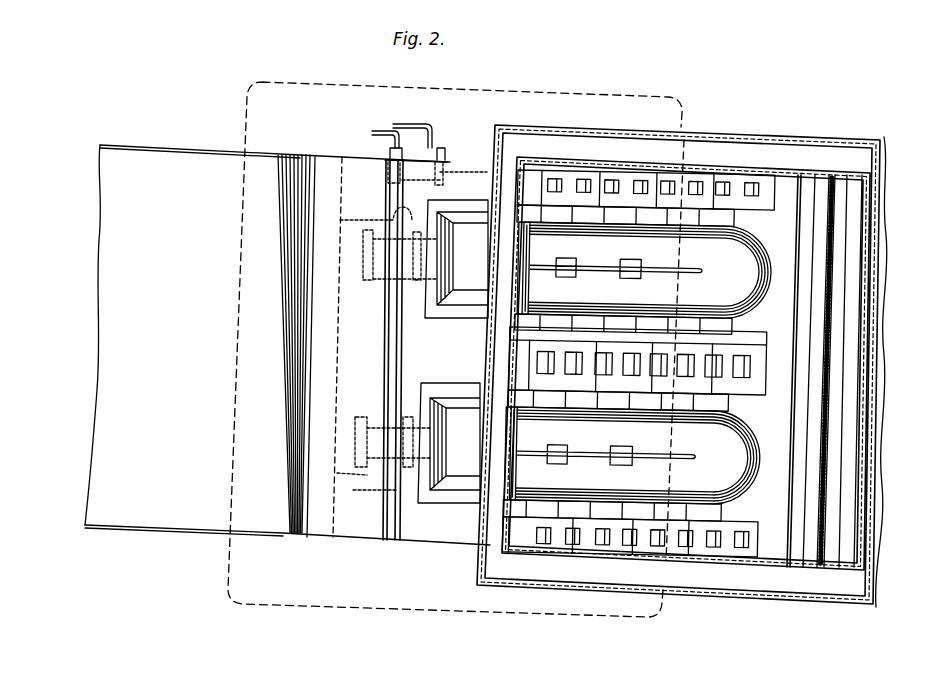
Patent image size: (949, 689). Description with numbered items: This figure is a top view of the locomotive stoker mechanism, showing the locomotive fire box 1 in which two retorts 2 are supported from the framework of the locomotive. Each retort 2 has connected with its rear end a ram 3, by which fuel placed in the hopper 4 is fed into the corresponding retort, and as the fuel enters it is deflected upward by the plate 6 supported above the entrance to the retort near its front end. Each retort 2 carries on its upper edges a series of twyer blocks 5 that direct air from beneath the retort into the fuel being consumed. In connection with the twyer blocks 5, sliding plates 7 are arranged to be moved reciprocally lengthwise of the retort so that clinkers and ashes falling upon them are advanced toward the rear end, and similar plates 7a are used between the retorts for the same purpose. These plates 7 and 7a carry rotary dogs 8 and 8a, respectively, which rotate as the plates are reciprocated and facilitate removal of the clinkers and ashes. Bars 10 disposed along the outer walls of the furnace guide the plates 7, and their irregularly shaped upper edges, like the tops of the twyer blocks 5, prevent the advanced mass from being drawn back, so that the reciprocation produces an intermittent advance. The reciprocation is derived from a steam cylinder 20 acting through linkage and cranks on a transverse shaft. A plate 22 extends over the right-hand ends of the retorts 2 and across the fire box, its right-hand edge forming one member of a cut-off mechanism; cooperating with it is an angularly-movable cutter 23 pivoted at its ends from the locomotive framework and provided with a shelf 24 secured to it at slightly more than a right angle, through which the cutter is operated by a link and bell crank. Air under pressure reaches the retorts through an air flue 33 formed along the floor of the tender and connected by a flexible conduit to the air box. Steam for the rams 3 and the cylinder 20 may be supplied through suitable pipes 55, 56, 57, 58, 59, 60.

The locomotive fire box 1 is at (884, 137).
The retort 2 is at (750, 267).
The ram 3 is at (377, 277).
The hopper 4 is at (453, 307).
The twyer block 5 is at (637, 210).
The plate 6 is at (518, 223).
The sliding plate 7 is at (685, 180).
The sliding plate 7a is at (700, 343).
The rotary dog 8 is at (760, 182).
The rotary dog 8a is at (743, 380).
The bar 10 is at (693, 173).
The cylinder 20 is at (430, 158).
The plate 22 is at (788, 362).
The cutter 23 is at (817, 428).
The shelf 24 is at (807, 452).
The air flue 33 is at (92, 432).
The pipe 55 is at (400, 124).
The pipe 56 is at (373, 134).
The pipe 57 is at (390, 183).
The pipe 58 is at (385, 239).
The pipe 59 is at (367, 450).
The pipe 60 is at (363, 492).